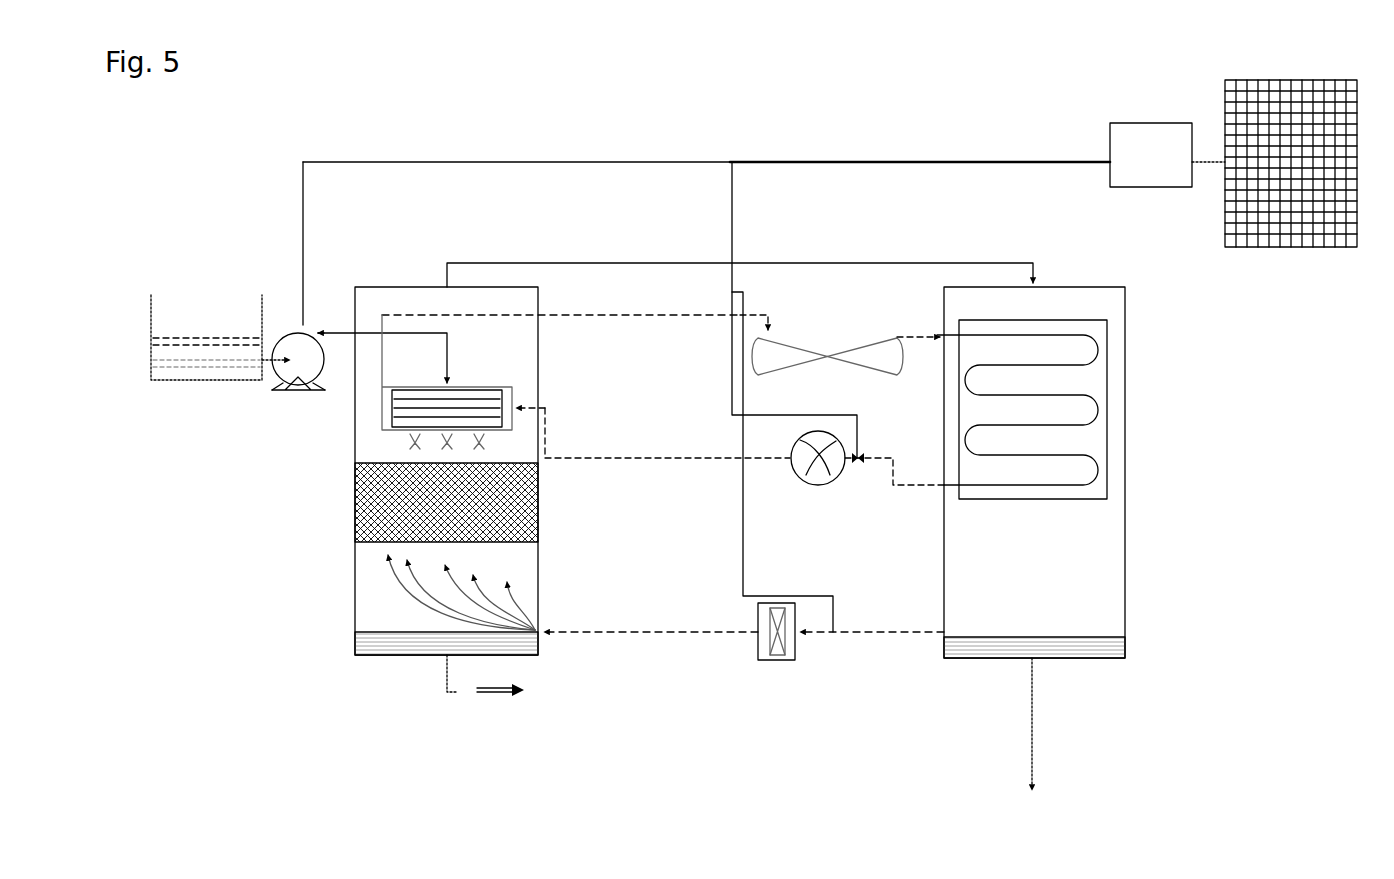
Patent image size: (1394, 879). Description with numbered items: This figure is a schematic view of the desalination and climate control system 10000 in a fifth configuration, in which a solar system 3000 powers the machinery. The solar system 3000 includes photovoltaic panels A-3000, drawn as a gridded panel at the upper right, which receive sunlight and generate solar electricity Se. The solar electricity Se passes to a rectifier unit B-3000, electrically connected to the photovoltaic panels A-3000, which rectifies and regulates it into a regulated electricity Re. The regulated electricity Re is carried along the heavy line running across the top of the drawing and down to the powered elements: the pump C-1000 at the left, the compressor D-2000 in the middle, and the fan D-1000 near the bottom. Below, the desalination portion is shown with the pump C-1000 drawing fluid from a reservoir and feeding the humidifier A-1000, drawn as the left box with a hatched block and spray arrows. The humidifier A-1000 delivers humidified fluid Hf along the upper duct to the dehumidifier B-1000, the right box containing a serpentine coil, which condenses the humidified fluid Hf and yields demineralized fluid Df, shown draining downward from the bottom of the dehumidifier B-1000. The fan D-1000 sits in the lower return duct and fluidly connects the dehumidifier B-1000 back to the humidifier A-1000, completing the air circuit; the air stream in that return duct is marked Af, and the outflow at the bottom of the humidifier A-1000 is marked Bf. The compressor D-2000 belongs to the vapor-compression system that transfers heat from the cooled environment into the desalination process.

The desalination and climate control system 10000 is at (362, 126).
The solar system 3000 is at (965, 130).
The regulated electricity Re is at (731, 162).
The solar electricity Se is at (1214, 162).
The rectifier unit B-3000 is at (1192, 190).
The photovoltaic panels A-3000 is at (1305, 248).
The humidified fluid Hf is at (830, 263).
The pump C-1000 is at (303, 372).
The humidifier A-1000 is at (552, 515).
The compressor D-2000 is at (795, 458).
The dehumidifier B-1000 is at (924, 544).
The air flow Af is at (723, 633).
The fan D-1000 is at (790, 660).
The treated air outflow Bf is at (447, 692).
The demineralized fluid Df is at (1027, 733).